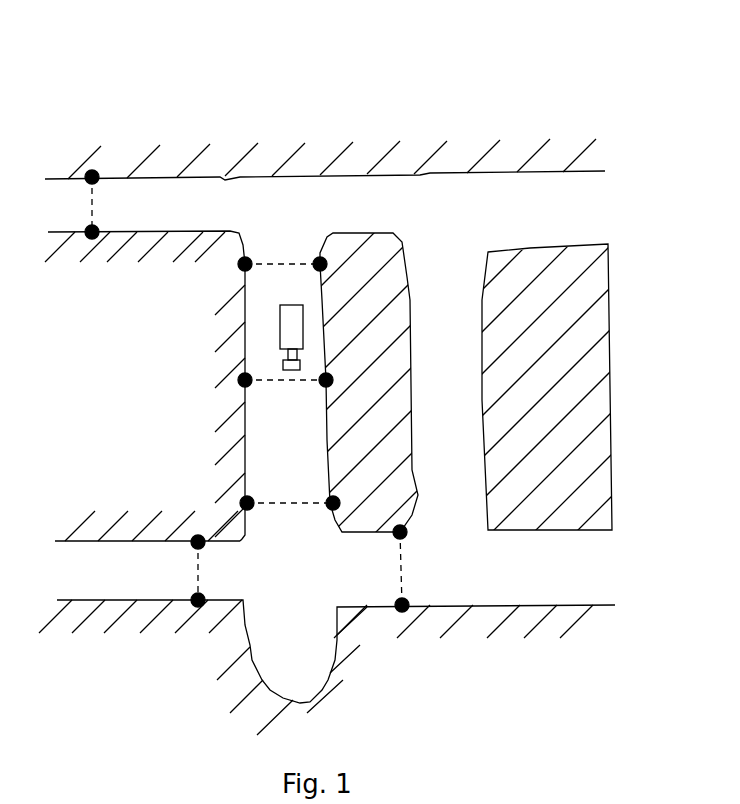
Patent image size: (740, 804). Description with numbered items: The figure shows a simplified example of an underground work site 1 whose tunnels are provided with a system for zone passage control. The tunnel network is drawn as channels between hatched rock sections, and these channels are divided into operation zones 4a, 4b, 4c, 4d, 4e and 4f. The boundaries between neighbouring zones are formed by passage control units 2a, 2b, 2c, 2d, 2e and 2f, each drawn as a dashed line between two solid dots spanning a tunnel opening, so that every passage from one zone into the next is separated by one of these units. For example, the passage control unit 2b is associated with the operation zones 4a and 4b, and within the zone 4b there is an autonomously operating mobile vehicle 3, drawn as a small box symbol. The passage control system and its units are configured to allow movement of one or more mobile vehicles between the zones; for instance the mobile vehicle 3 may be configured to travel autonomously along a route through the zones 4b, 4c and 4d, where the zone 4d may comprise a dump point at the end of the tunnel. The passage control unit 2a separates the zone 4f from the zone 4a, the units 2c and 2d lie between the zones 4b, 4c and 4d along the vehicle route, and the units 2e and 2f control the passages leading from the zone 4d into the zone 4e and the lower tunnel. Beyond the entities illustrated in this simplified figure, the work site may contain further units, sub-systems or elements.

The underground work site 1 is at (321, 114).
The passage control unit 2a is at (93, 207).
The passage control unit 2b is at (248, 275).
The passage control unit 2c is at (255, 383).
The passage control unit 2d is at (287, 500).
The passage control unit 2e is at (197, 585).
The passage control unit 2f is at (403, 582).
The autonomously operating mobile vehicle 3 is at (280, 327).
The operation zone 4a is at (276, 212).
The operation zone 4b is at (303, 296).
The operation zone 4c is at (298, 422).
The operation zone 4d is at (303, 561).
The operation zone 4e is at (128, 581).
The operation zone 4f is at (69, 212).